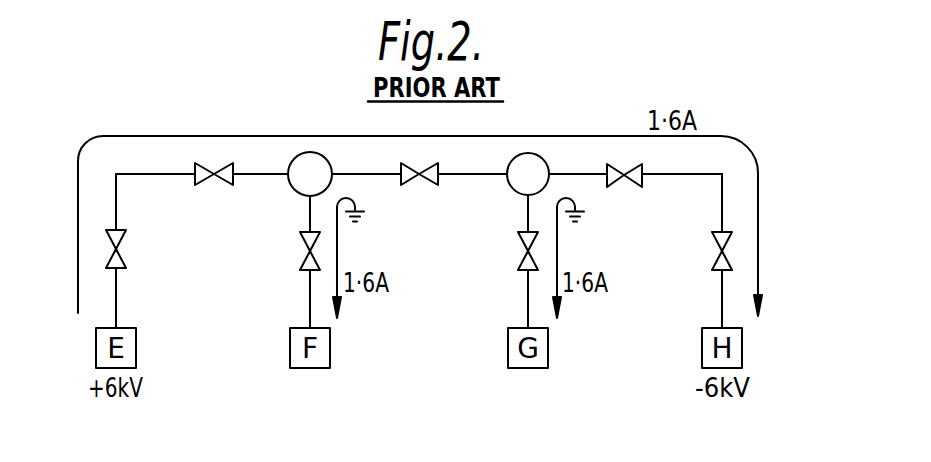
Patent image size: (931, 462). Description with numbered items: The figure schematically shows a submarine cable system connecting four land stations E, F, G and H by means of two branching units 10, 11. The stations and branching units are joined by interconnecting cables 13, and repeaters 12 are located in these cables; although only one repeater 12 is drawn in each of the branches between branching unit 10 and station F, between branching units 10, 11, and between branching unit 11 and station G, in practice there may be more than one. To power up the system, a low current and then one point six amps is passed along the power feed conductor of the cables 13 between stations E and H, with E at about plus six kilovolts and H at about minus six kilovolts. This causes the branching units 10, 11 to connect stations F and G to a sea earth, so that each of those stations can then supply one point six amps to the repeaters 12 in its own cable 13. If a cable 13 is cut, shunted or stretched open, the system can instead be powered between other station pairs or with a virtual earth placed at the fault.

The branching unit 10 is at (314, 151).
The branching unit 11 is at (527, 152).
The repeater 12 is at (215, 187).
The interconnecting cable 13 is at (269, 176).